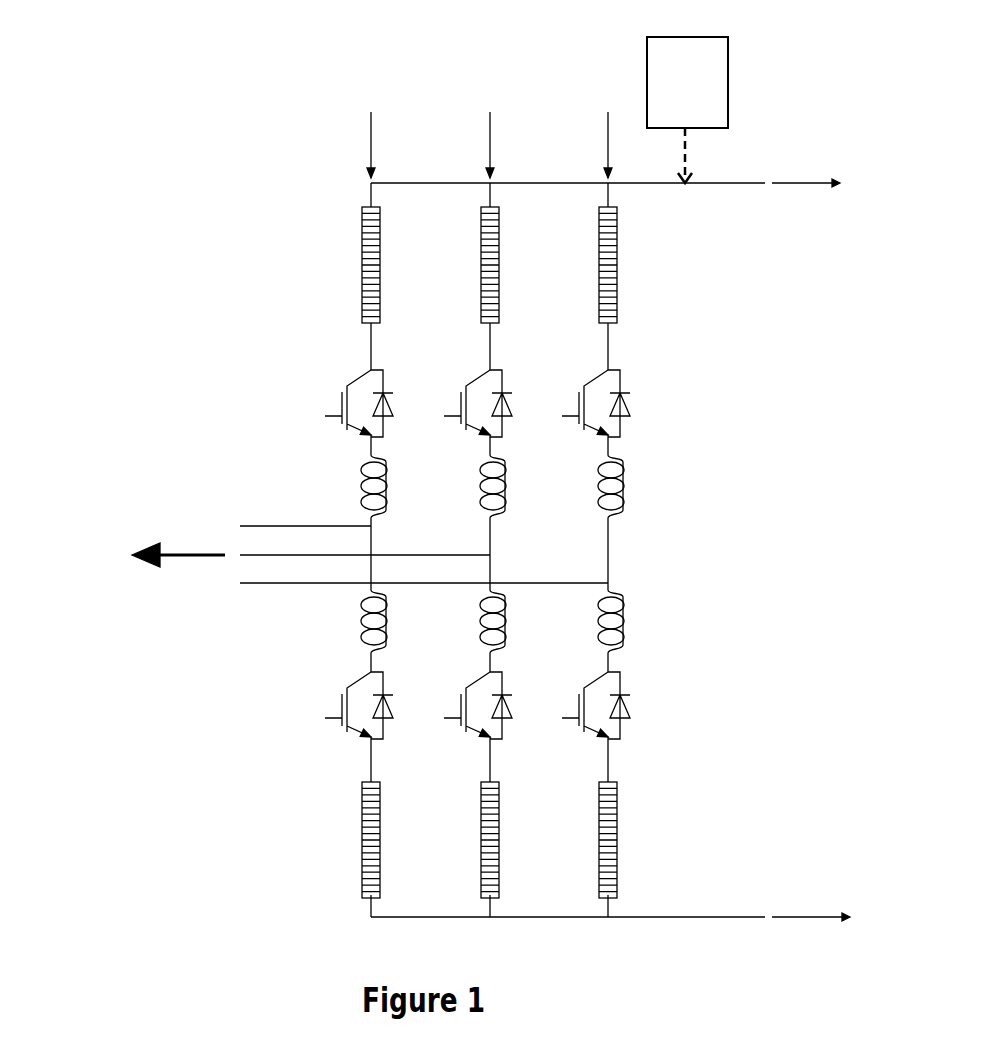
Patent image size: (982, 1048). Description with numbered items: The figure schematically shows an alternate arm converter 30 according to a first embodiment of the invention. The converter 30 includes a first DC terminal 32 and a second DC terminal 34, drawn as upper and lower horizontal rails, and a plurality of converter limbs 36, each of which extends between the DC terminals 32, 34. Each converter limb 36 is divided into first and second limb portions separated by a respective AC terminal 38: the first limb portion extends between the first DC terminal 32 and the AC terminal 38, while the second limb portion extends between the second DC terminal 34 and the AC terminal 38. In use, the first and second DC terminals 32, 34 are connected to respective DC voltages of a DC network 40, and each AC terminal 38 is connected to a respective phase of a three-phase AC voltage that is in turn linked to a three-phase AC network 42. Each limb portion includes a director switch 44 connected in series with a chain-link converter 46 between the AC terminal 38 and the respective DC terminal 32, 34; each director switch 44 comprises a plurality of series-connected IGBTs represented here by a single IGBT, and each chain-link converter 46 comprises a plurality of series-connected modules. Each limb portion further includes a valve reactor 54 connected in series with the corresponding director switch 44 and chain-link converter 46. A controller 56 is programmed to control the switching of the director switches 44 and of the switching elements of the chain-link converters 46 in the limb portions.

The alternate arm converter 30 is at (176, 262).
The first DC terminal 32 is at (733, 184).
The second DC terminal 34 is at (735, 915).
The converter limb 36 is at (489, 127).
The AC terminal 38 is at (362, 521).
The DC network 40 is at (831, 551).
The three-phase AC network 42 is at (158, 556).
The director switch 44 is at (465, 554).
The chain-link converter 46 is at (469, 552).
The valve reactor 54 is at (512, 554).
The controller 56 is at (706, 102).